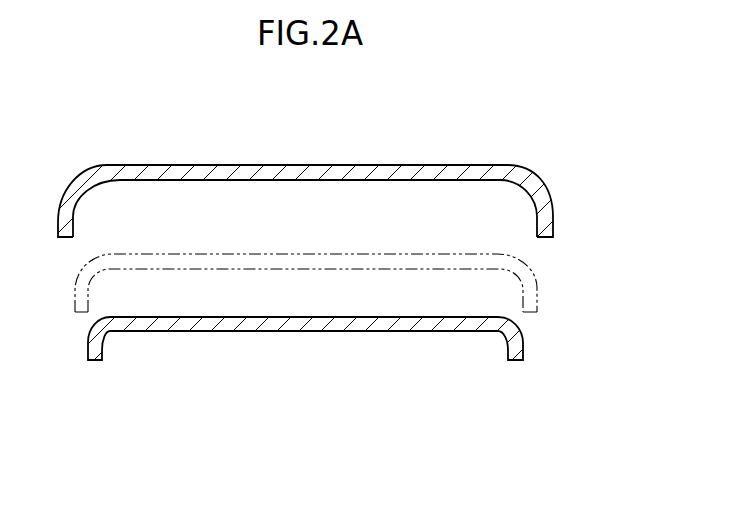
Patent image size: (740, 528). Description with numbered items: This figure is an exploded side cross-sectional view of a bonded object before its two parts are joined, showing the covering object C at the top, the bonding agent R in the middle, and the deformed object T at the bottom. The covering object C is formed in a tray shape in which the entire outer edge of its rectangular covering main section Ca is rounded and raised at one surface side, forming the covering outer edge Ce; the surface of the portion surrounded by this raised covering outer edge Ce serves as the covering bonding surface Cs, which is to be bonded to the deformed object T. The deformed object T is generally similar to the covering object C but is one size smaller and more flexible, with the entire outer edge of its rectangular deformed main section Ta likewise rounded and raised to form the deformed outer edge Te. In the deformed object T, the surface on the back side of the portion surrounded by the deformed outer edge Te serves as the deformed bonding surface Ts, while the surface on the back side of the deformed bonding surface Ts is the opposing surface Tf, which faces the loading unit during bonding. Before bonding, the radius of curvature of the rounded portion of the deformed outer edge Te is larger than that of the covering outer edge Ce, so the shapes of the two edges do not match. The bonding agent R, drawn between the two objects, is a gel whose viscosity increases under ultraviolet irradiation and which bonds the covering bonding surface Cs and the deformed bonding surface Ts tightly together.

The covering object C is at (317, 189).
The covering main section Ca is at (367, 165).
The covering outer edge Ce is at (537, 183).
The covering bonding surface Cs is at (80, 214).
The bonding agent R is at (540, 302).
The deformed object T is at (320, 360).
The deformed main section Ta is at (358, 333).
The deformed outer edge Te is at (502, 352).
The opposing surface Tf is at (258, 338).
The deformed bonding surface Ts is at (227, 311).